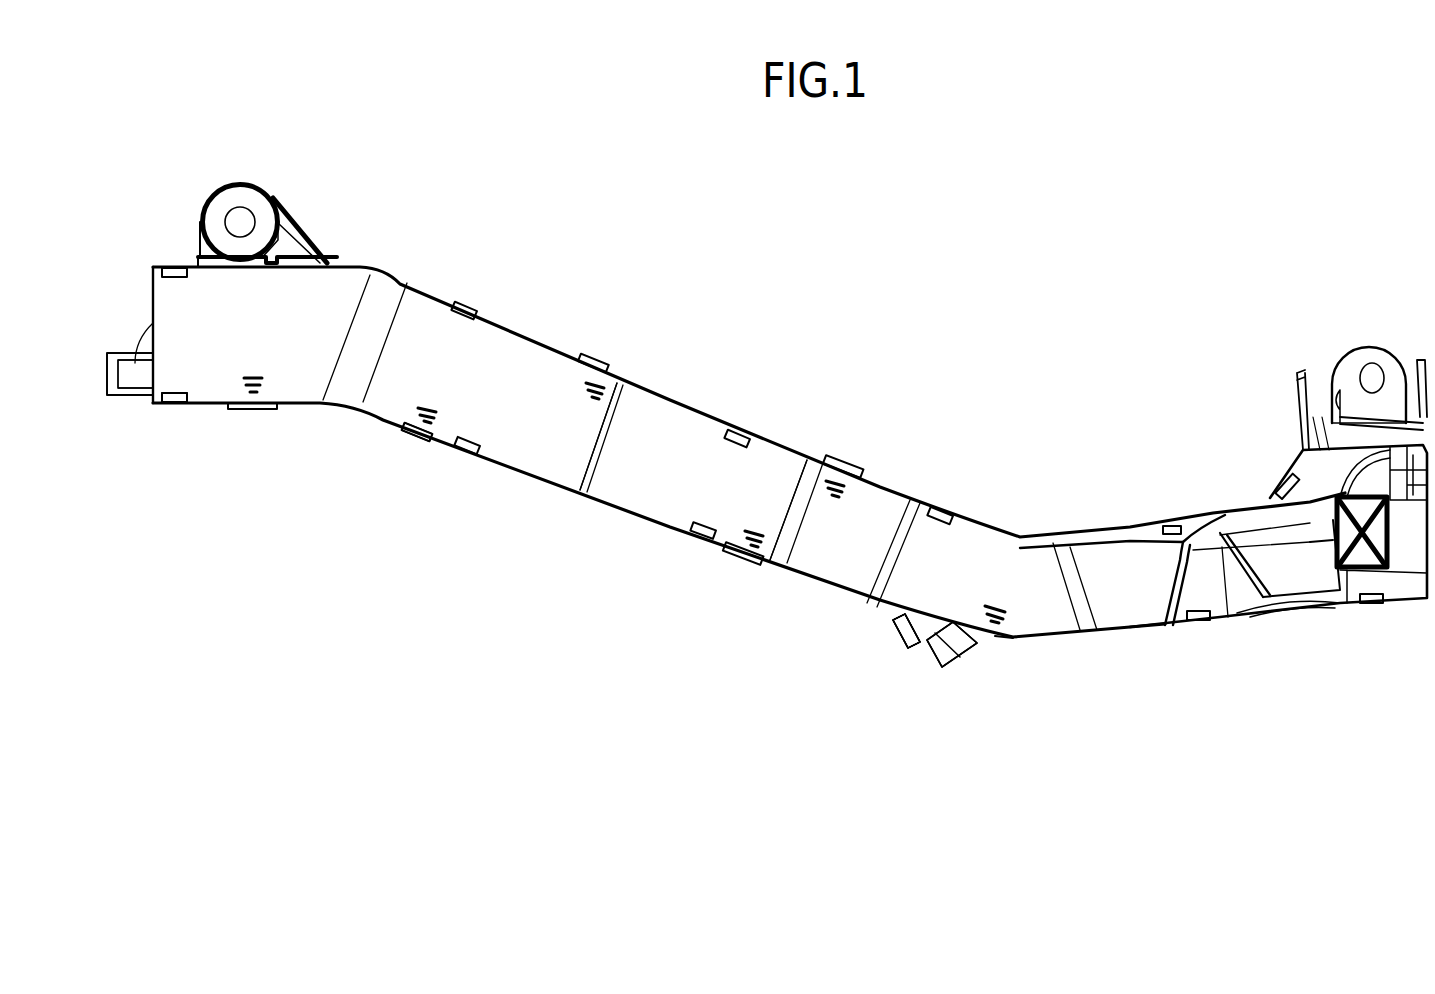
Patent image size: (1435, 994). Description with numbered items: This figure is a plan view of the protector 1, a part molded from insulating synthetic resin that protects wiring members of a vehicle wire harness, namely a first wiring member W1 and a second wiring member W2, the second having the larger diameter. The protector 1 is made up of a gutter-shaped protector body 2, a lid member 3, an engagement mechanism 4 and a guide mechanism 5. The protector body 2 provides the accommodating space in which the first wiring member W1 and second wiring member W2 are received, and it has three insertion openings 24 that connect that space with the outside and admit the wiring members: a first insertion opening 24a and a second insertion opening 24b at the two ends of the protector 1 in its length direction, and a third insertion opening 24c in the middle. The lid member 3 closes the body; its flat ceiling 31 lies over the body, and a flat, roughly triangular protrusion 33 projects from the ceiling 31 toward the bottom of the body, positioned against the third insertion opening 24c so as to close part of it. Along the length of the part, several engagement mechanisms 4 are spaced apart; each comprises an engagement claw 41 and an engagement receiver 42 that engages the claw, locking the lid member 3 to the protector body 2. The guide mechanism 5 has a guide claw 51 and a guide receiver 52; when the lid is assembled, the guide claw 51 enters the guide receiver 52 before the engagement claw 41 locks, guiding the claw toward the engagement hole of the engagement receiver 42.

The protector 1 is at (923, 352).
The protector body 2 is at (1297, 414).
The lid member 3 is at (514, 370).
The ceiling 31 is at (662, 437).
The protrusion 33 is at (927, 648).
The engagement mechanism 4 is at (171, 266).
The engagement claw 41 is at (541, 520).
The engagement receiver 42 is at (541, 520).
The guide mechanism 5 is at (610, 360).
The guide claw 51 is at (435, 491).
The guide receiver 52 is at (404, 499).
The insertion openings 24 is at (745, 374).
The first insertion opening 24a is at (137, 397).
The second insertion opening 24b is at (1347, 398).
The third insertion opening 24c is at (923, 647).
The first wiring member W1 is at (130, 363).
The second wiring member W2 is at (103, 370).